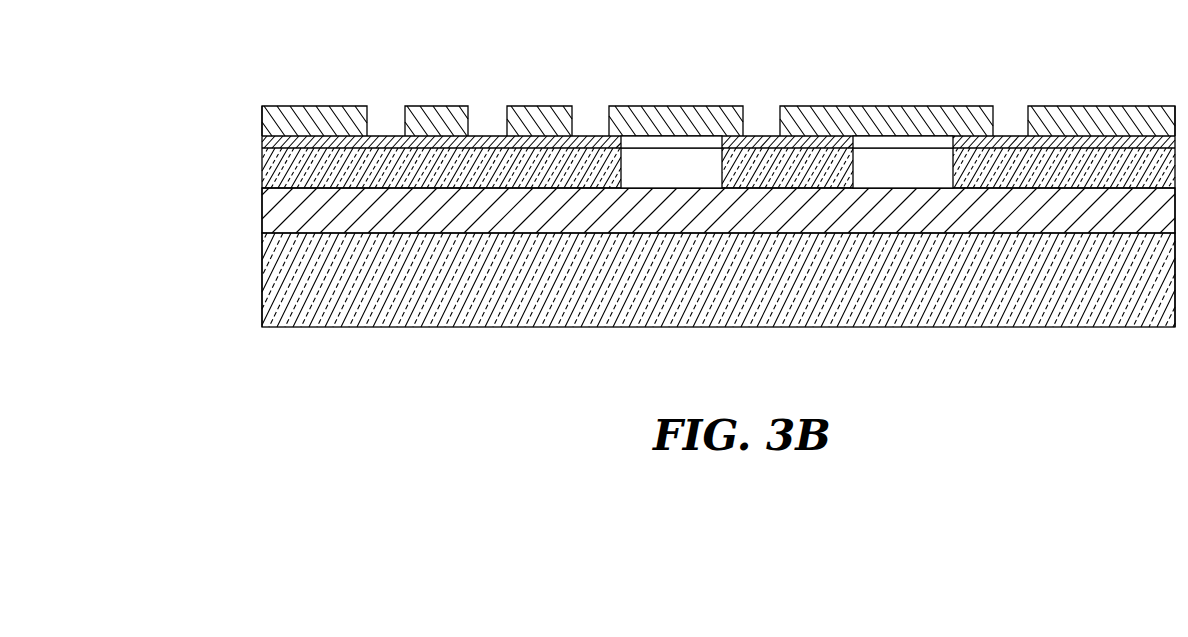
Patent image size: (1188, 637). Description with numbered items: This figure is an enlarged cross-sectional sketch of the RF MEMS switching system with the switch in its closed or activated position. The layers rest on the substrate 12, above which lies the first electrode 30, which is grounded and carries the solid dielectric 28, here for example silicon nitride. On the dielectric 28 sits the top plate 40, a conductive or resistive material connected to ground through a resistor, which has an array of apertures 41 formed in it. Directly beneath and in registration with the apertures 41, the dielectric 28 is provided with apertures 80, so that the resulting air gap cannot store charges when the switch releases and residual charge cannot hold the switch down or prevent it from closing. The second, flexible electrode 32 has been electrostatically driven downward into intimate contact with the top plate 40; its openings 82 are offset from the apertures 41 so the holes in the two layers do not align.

The substrate 12 is at (262, 288).
The dielectric 28 is at (262, 170).
The first electrode 30 is at (262, 215).
The flexible electrode 32 is at (308, 120).
The top plate 40 is at (262, 138).
The apertures 41 is at (648, 142).
The apertures 80 is at (682, 181).
The openings 82 is at (386, 108).